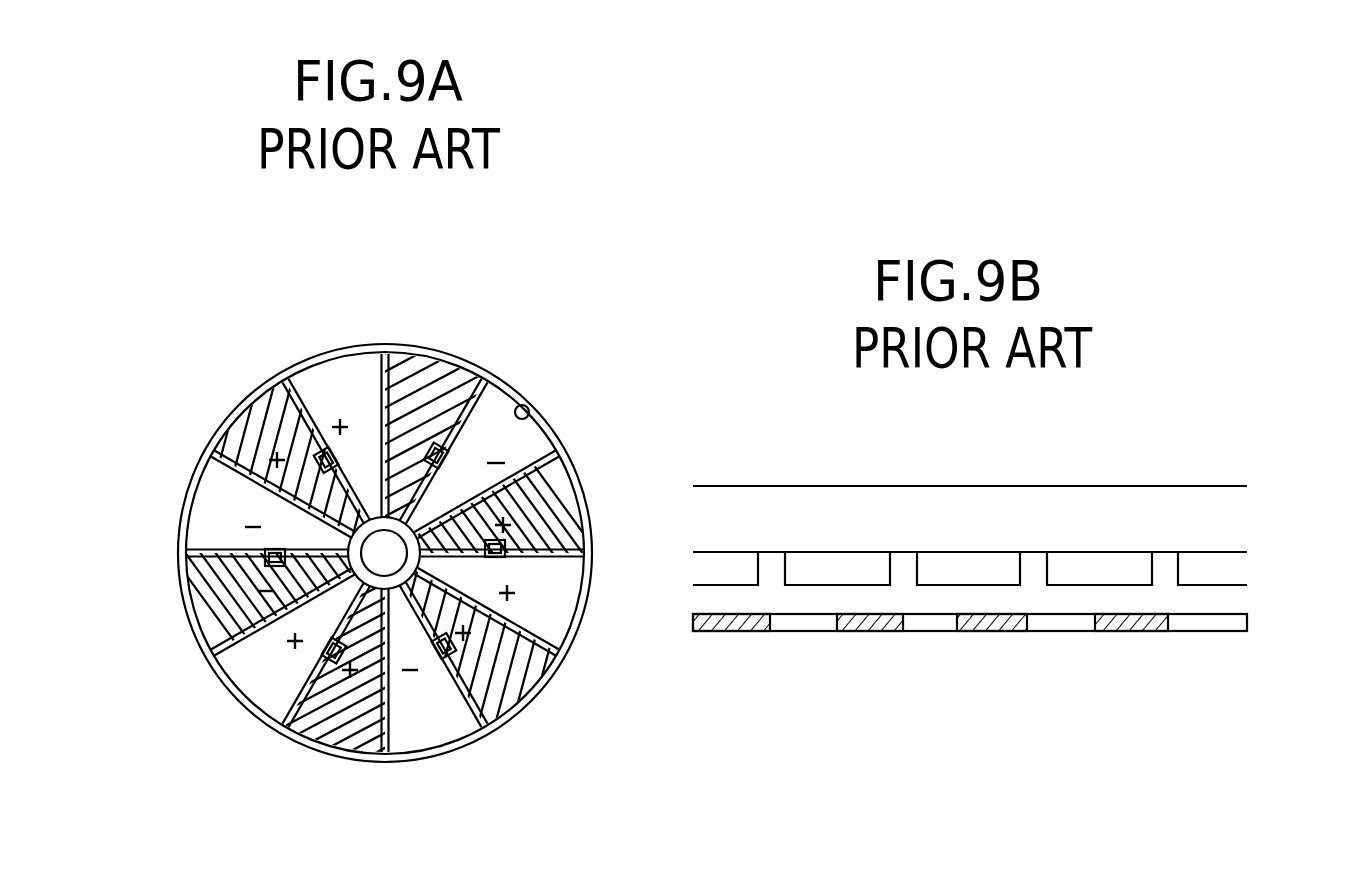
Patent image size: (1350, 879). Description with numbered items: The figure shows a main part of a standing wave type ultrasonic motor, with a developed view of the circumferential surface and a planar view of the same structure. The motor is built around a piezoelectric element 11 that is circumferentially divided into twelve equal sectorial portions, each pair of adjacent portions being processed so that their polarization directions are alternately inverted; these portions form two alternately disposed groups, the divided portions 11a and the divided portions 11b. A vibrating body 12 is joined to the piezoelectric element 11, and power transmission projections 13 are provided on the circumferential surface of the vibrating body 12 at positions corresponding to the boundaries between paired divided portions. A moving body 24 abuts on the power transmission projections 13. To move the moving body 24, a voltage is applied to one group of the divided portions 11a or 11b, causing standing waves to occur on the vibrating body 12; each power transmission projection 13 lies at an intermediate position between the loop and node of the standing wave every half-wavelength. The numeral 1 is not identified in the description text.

In FIG. 9B, the stator 1 is at (1233, 632).
In FIG. 9A, the piezoelectric element 11 is at (545, 432).
In FIG. 9A, the divided portions 11a is at (263, 423).
In FIG. 9B, the divided portions 11a is at (863, 627).
In FIG. 9A, the divided portions 11b is at (342, 387).
In FIG. 9B, the divided portions 11b is at (800, 624).
In FIG. 9A, the vibrating body 12 is at (583, 637).
In FIG. 9B, the vibrating body 12 is at (1223, 600).
In FIG. 9A, the power transmission projections 13 is at (448, 463).
In FIG. 9B, the power transmission projections 13 is at (1168, 571).
In FIG. 9B, the moving body 24 is at (1153, 498).